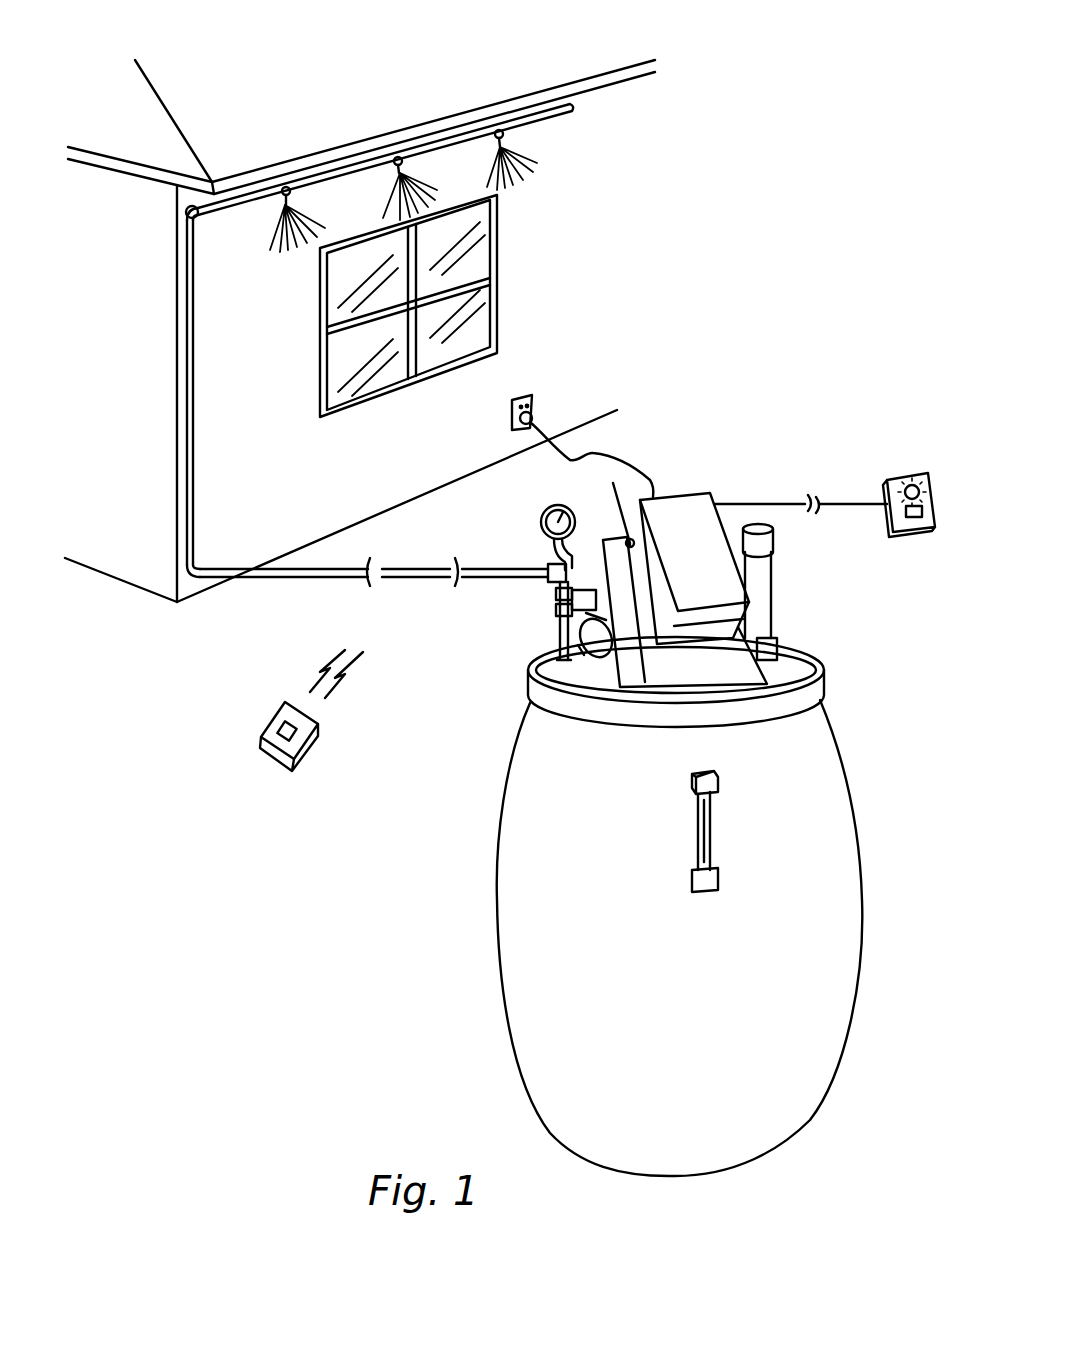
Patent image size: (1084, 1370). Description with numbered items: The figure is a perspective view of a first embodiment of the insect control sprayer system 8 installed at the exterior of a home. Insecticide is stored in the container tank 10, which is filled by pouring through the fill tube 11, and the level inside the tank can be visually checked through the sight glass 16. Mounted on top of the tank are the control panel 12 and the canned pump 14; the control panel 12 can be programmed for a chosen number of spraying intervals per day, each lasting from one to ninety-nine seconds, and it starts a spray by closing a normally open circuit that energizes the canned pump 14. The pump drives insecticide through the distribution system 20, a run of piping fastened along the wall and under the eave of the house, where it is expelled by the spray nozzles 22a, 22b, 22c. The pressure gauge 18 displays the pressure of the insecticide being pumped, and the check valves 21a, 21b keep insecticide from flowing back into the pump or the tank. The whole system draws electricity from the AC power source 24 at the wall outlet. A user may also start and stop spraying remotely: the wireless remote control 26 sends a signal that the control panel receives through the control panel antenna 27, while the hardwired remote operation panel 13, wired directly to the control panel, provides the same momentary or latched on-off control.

The insect control sprayer system 8 is at (760, 395).
The container tank 10 is at (497, 870).
The fill tube 11 is at (776, 590).
The control panel 12 is at (697, 503).
The hardwired remote operation panel 13 is at (897, 477).
The canned pump 14 is at (560, 640).
The sight glass 16 is at (720, 797).
The pressure gauge 18 is at (540, 525).
The distribution system 20 is at (217, 575).
The check valve 21a is at (560, 620).
The check valve 21b is at (517, 599).
The spray nozzle 22a is at (285, 185).
The spray nozzle 22b is at (397, 160).
The spray nozzle 22c is at (496, 130).
The AC power source 24 is at (535, 412).
The wireless remote control 26 is at (262, 752).
The control panel antenna 27 is at (613, 505).